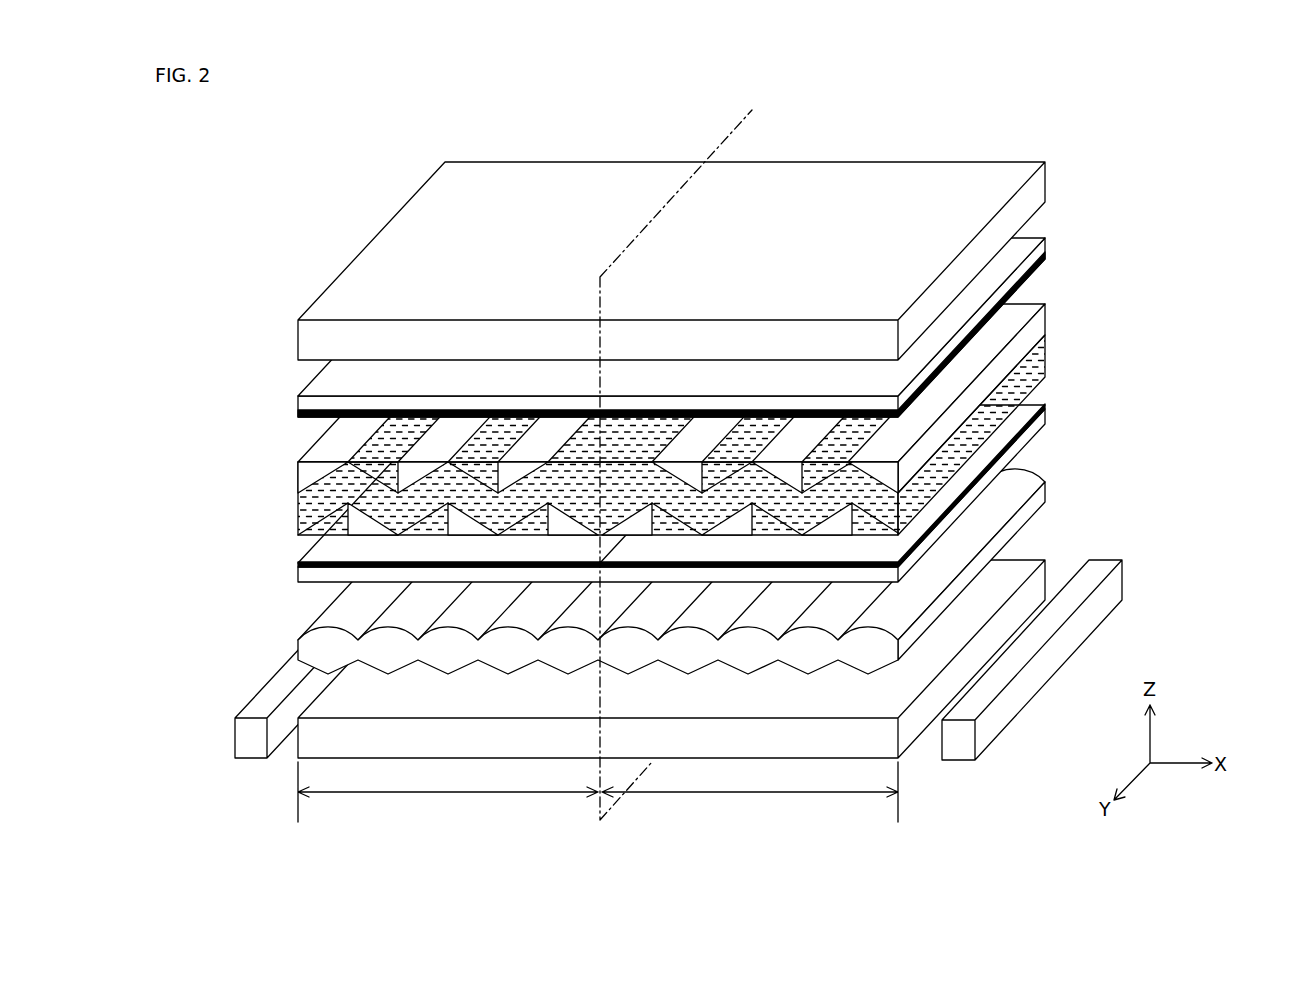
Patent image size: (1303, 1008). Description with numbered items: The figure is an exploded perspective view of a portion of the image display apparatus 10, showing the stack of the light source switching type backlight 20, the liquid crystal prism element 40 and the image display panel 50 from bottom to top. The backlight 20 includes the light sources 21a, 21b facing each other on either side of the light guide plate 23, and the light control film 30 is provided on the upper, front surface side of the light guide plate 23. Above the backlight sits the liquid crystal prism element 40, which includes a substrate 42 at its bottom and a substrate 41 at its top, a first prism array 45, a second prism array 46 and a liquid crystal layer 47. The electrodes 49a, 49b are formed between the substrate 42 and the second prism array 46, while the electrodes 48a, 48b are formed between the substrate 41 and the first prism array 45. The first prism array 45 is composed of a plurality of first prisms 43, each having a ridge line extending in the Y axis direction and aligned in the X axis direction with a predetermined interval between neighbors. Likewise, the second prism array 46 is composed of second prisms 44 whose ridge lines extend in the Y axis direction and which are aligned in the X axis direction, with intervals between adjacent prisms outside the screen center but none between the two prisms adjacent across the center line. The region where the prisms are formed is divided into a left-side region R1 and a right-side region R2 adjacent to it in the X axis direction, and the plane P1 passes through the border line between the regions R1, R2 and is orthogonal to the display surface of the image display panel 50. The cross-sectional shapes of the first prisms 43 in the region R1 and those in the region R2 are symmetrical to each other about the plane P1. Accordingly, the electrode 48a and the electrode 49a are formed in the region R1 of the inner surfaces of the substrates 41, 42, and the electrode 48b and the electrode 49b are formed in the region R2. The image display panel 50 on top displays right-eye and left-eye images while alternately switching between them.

The image display apparatus 10 is at (1218, 140).
The light source switching type backlight 20 is at (1134, 568).
The light source 21a is at (250, 760).
The light source 21b is at (961, 761).
The light guide plate 23 is at (1043, 558).
The light control film 30 is at (1046, 487).
The liquid crystal prism element 40 is at (1142, 270).
The substrate 41 is at (300, 396).
The substrate 42 is at (297, 578).
The first prism 43 is at (1032, 317).
The second prism 44 is at (337, 518).
The first prism array 45 is at (721, 391).
The second prism array 46 is at (550, 498).
The liquid crystal layer 47 is at (1045, 362).
The electrode 48a is at (298, 416).
The electrode 48b is at (1032, 278).
The electrode 49a is at (322, 555).
The electrode 49b is at (1023, 413).
The image display panel 50 is at (1048, 180).
The plane P1 is at (730, 130).
The region R1 is at (448, 792).
The region R2 is at (750, 792).